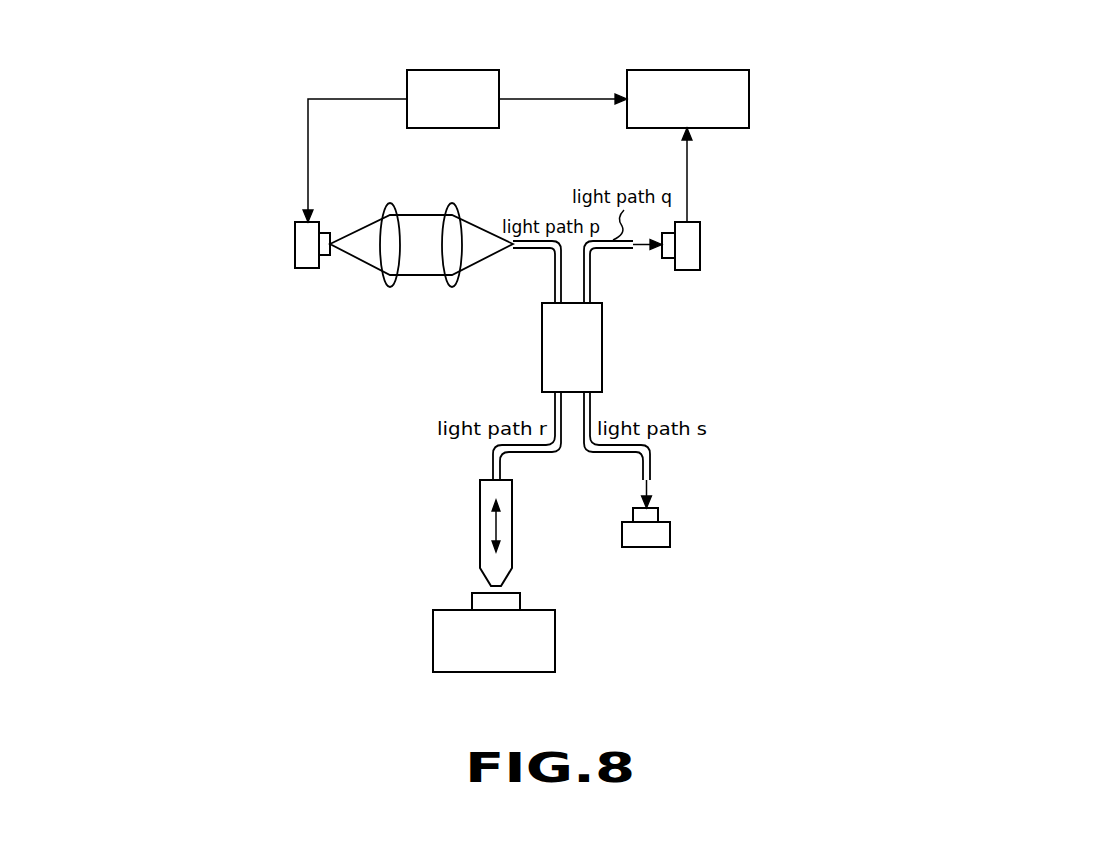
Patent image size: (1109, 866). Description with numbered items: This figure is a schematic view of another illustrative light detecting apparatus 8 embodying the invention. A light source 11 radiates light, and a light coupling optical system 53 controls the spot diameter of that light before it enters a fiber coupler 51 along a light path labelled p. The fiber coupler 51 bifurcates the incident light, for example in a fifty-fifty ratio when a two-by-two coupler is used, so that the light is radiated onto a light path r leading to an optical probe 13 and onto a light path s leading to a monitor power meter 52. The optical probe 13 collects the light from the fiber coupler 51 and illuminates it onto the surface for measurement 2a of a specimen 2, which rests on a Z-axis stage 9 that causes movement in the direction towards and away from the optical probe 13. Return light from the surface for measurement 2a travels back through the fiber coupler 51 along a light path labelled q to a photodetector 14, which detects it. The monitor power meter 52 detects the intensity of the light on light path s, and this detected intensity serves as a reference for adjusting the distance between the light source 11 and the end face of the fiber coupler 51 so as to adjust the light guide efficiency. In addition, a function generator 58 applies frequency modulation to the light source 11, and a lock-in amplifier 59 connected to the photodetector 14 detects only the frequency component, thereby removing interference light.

The function generator 58 is at (452, 70).
The lock-in amplifier 59 is at (687, 70).
The light source 11 is at (295, 245).
The light coupling optical system 53 is at (468, 196).
The photodetector 14 is at (700, 245).
The fiber coupler 51 is at (602, 348).
The optical probe 13 is at (512, 527).
The monitor power meter 52 is at (670, 535).
The specimen 2 is at (520, 594).
The surface for measurement 2a is at (478, 593).
The Z-axis stage 9 is at (555, 640).
The light detecting apparatus 8 is at (346, 382).